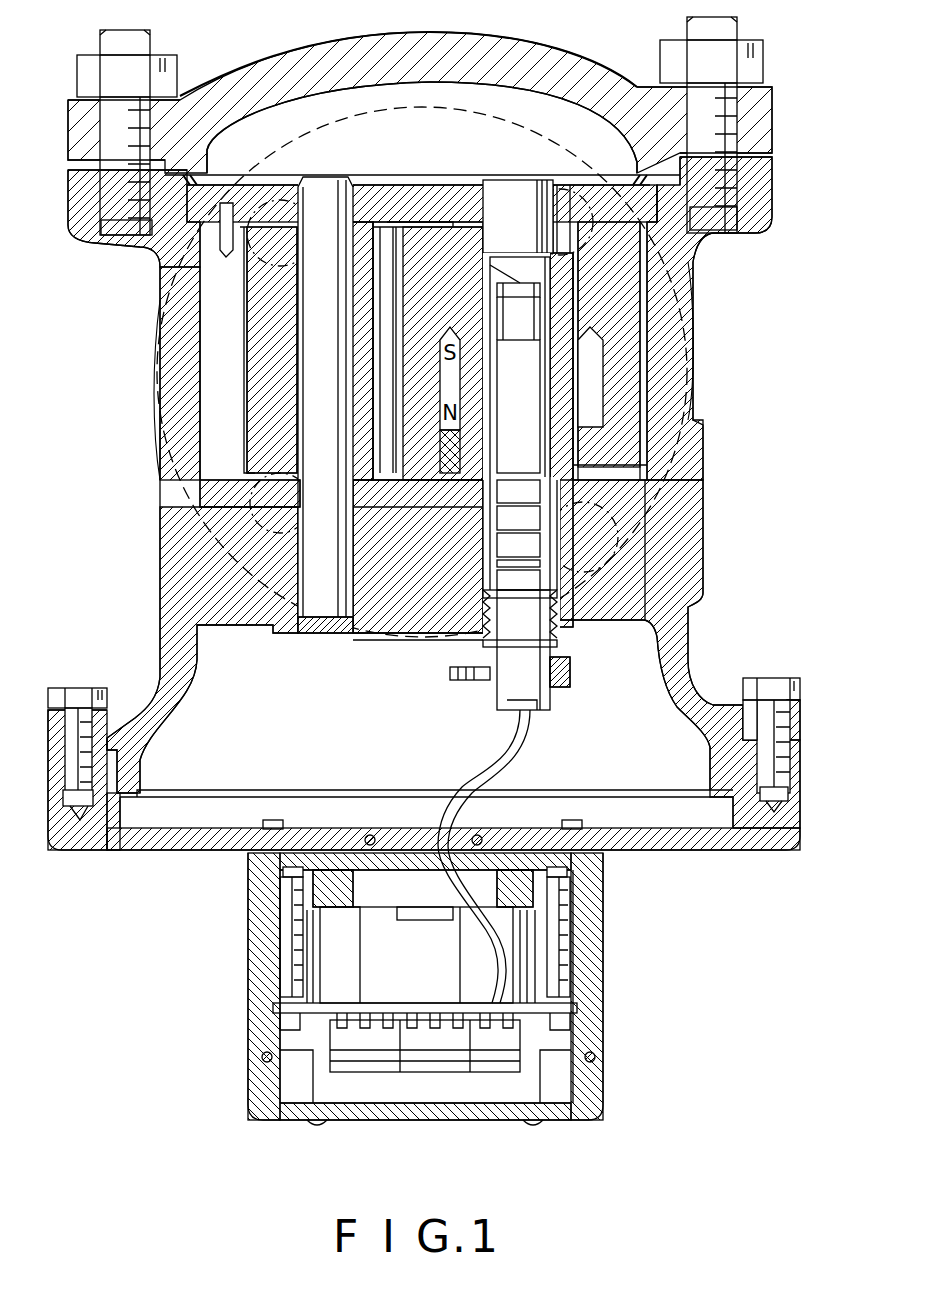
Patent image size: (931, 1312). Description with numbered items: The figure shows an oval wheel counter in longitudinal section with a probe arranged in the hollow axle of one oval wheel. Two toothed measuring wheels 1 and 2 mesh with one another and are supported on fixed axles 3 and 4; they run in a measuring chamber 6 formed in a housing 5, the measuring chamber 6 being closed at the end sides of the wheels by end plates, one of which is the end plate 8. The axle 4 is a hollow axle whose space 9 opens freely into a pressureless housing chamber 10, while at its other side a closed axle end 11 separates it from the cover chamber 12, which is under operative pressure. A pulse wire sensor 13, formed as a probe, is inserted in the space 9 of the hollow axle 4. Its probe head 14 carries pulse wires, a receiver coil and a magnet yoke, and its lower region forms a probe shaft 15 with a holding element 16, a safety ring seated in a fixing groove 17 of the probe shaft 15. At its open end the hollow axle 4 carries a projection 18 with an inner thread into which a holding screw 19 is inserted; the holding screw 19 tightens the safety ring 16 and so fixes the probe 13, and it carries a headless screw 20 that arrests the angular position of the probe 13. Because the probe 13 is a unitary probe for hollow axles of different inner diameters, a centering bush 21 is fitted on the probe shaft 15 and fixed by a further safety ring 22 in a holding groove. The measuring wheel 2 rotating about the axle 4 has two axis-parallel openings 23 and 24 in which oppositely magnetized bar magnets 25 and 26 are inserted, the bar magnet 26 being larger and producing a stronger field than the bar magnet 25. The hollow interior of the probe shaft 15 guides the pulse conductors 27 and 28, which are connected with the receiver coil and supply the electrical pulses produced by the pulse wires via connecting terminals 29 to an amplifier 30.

The measuring wheel 1 is at (263, 296).
The measuring wheel 2 is at (623, 266).
The fixed axle 3 is at (333, 587).
The hollow axle 4 is at (550, 407).
The housing 5 is at (173, 417).
The measuring chamber 6 is at (208, 390).
The end plate 8 is at (227, 492).
The space 9 is at (537, 310).
The housing chamber 10 is at (268, 770).
The closed axle end 11 is at (500, 200).
The cover chamber 12 is at (328, 100).
The pulse wire sensor 13 is at (547, 443).
The probe head 14 is at (518, 362).
The probe shaft 15 is at (557, 643).
The holding element 16 is at (587, 603).
The fixing groove 17 is at (477, 647).
The projection 18 is at (450, 632).
The holding screw 19 is at (567, 677).
The headless screw 20 is at (457, 683).
The centering bush 21 is at (477, 517).
The further safety ring 22 is at (577, 535).
The axis-parallel opening 23 is at (413, 503).
The axis-parallel opening 24 is at (607, 455).
The bar magnet 25 is at (437, 362).
The bar magnet 26 is at (593, 360).
The pulse conductor 27 is at (513, 734).
The pulse conductor 28 is at (533, 741).
The connecting terminals 29 is at (517, 1023).
The amplifier 30 is at (333, 982).